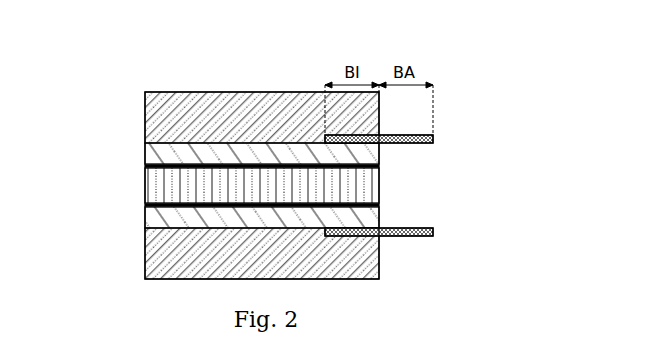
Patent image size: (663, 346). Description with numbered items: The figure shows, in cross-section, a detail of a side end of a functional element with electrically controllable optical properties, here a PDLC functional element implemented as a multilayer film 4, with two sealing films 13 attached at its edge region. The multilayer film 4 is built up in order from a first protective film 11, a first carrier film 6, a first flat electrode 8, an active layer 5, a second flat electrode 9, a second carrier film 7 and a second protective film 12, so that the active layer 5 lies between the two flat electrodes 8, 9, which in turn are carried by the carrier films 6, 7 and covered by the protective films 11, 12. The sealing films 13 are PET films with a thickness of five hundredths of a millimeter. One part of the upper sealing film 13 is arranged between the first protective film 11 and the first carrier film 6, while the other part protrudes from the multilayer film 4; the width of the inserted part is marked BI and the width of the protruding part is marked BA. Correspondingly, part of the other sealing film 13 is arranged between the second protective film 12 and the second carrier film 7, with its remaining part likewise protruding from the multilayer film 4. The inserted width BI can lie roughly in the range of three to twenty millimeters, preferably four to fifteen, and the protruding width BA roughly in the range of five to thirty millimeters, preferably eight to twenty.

The multilayer film 4 is at (65, 92).
The active layer 5 is at (145, 186).
The first carrier film 6 is at (145, 155).
The second carrier film 7 is at (145, 218).
The first flat electrode 8 is at (145, 166).
The second flat electrode 9 is at (145, 206).
The first protective film 11 is at (145, 119).
The second protective film 12 is at (145, 254).
The sealing film 13 is at (433, 136).